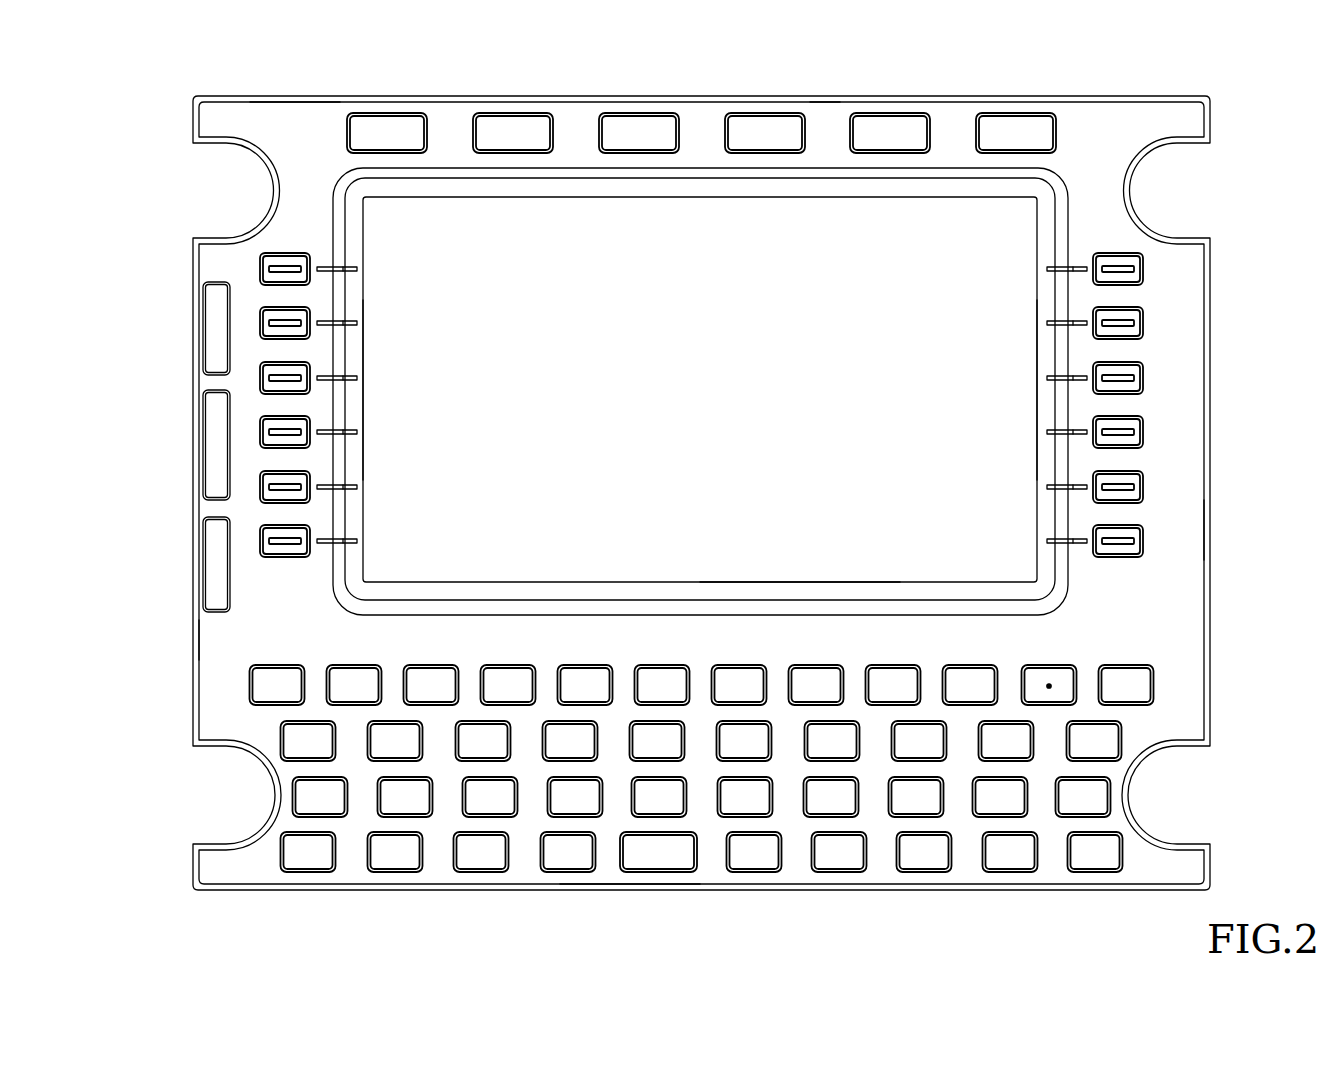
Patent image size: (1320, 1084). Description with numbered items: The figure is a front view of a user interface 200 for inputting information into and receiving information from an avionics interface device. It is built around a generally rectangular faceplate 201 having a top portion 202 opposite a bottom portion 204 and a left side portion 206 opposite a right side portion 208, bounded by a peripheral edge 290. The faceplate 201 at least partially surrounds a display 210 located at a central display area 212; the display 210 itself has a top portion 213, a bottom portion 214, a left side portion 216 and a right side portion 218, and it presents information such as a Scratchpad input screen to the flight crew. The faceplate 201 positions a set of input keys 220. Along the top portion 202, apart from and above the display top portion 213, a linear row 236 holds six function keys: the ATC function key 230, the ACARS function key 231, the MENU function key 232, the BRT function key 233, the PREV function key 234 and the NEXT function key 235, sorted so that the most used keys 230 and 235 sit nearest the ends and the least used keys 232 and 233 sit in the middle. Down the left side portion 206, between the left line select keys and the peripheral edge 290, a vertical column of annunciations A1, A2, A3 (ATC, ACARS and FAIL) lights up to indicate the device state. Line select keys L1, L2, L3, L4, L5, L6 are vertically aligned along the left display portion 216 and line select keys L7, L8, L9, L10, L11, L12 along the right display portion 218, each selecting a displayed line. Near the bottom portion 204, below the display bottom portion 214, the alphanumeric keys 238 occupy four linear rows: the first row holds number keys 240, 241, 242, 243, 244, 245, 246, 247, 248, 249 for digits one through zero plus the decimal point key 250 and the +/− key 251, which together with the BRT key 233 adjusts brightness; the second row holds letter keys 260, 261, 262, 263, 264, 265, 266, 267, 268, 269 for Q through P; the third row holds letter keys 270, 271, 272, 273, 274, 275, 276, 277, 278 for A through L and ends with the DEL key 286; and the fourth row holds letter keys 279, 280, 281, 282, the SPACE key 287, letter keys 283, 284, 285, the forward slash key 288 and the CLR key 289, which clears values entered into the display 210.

The user interface 200 is at (236, 77).
The faceplate 201 is at (300, 127).
The top portion 202 is at (820, 118).
The bottom portion 204 is at (620, 890).
The left side portion 206 is at (210, 640).
The right side portion 208 is at (1180, 530).
The display 210 is at (678, 398).
The display area 212 is at (1075, 570).
The top portion of display 213 is at (626, 197).
The bottom portion of display 214 is at (793, 582).
The left side portion of display 216 is at (363, 383).
The right side portion of display 218 is at (1037, 383).
The input keys 220 is at (263, 858).
The ATC function key 230 is at (389, 113).
The ACARS function key 231 is at (514, 113).
The MENU function key 232 is at (640, 113).
The BRT function key 233 is at (765, 113).
The PREV function key 234 is at (891, 113).
The NEXT function key 235 is at (1068, 132).
The row of function keys 236 is at (816, 102).
The alphanumeric keys 238 is at (695, 664).
The number key 240 is at (274, 665).
The number key 241 is at (351, 665).
The number key 242 is at (428, 665).
The number key 243 is at (505, 665).
The number key 244 is at (582, 665).
The number key 245 is at (659, 665).
The number key 246 is at (736, 665).
The number key 247 is at (813, 665).
The number key 248 is at (890, 665).
The number key 249 is at (967, 665).
The decimal point key 250 is at (1046, 665).
The +/− key 251 is at (1157, 686).
The letter key 260 is at (710, 751).
The letter key 261 is at (392, 740).
The letter key 262 is at (480, 740).
The letter key 263 is at (560, 740).
The letter key 264 is at (650, 740).
The letter key 265 is at (740, 740).
The letter key 266 is at (838, 740).
The letter key 267 is at (925, 740).
The letter key 268 is at (1005, 740).
The letter key 269 is at (1110, 742).
The letter key 270 is at (335, 805).
The letter key 271 is at (420, 805).
The letter key 272 is at (505, 805).
The letter key 273 is at (590, 805).
The letter key 274 is at (675, 802).
The letter key 275 is at (760, 802).
The letter key 276 is at (845, 802).
The letter key 277 is at (930, 802).
The letter key 278 is at (1015, 802).
The letter key 279 is at (325, 862).
The letter key 280 is at (410, 862).
The letter key 281 is at (495, 862).
The letter key 282 is at (582, 862).
The letter key 283 is at (770, 862).
The letter key 284 is at (858, 862).
The letter key 285 is at (943, 862).
The DEL key 286 is at (1108, 808).
The SPACE key 287 is at (680, 862).
The forward slash key 288 is at (1028, 862).
The CLR key 289 is at (1125, 855).
The peripheral edge 290 is at (172, 438).
The ATC annunciation A1 is at (206, 305).
The ACARS annunciation A2 is at (206, 418).
The FAIL annunciation A3 is at (206, 548).
The line select key L1 is at (298, 263).
The line select key L2 is at (298, 317).
The line select key L3 is at (298, 372).
The line select key L4 is at (298, 426).
The line select key L5 is at (298, 481).
The line select key L6 is at (298, 535).
The line select key L7 is at (1103, 263).
The line select key L8 is at (1103, 317).
The line select key L9 is at (1103, 372).
The line select key L10 is at (1103, 426).
The line select key L11 is at (1103, 481).
The line select key L12 is at (1103, 535).